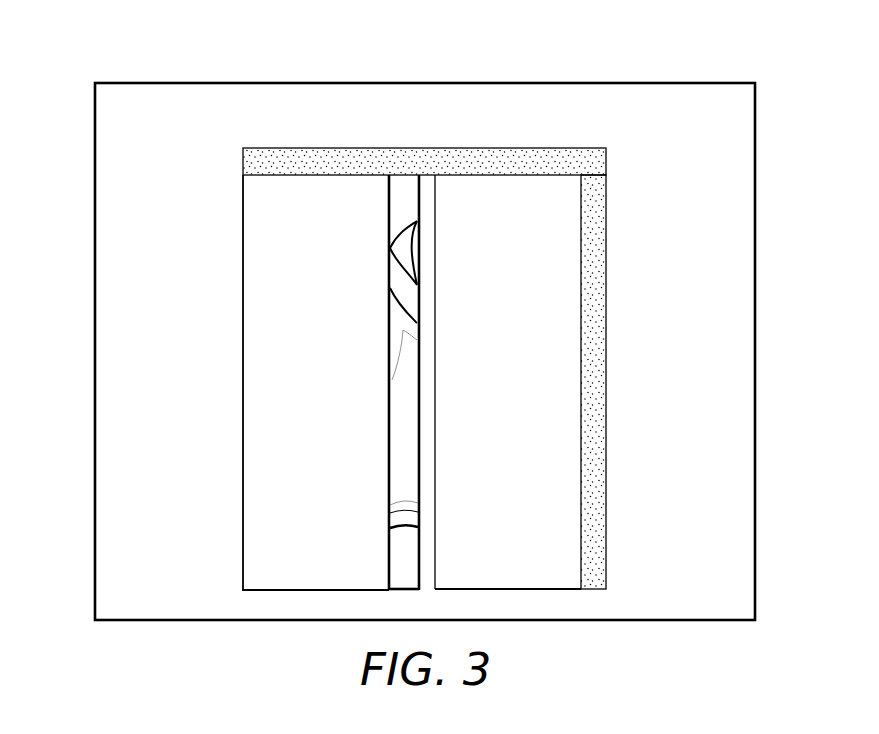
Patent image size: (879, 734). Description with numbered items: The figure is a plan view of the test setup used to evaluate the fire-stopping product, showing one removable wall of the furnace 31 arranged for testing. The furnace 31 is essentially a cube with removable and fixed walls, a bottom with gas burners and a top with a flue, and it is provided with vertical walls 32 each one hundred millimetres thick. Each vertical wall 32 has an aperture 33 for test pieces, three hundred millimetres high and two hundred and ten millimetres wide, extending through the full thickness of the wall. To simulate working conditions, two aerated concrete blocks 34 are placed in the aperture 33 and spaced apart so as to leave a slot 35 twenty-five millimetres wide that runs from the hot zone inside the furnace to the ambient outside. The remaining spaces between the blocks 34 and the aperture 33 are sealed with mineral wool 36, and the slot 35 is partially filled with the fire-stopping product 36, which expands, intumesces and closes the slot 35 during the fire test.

The furnace 31 is at (92, 65).
The vertical wall 32 is at (742, 157).
The aperture 33 is at (243, 373).
The aerated concrete block 34 is at (291, 573).
The slot 35 is at (433, 447).
The mineral wool 36 is at (427, 183).